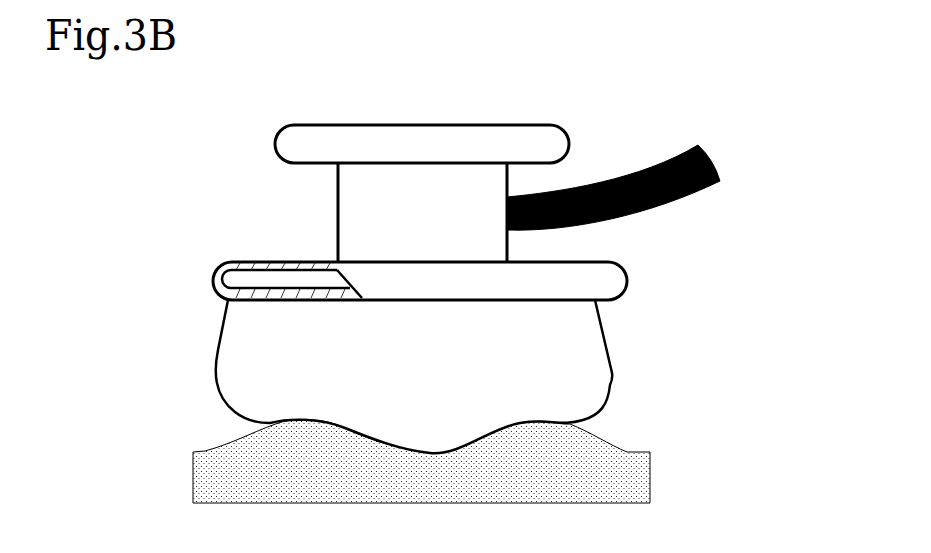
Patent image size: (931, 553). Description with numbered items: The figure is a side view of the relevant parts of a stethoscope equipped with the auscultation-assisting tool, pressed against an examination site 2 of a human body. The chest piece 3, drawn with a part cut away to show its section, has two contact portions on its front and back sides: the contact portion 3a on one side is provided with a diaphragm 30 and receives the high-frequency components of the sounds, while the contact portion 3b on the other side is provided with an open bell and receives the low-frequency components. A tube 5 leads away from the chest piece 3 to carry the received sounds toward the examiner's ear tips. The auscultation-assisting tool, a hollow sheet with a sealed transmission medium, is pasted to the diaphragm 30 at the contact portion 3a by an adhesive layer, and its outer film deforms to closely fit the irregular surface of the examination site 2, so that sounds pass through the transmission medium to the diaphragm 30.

The examination site 2 is at (633, 474).
The chest piece 3 is at (338, 212).
The contact portion 3a is at (213, 280).
The contact portion 3b is at (424, 125).
The tube 5 is at (648, 170).
The diaphragm 30 is at (285, 301).